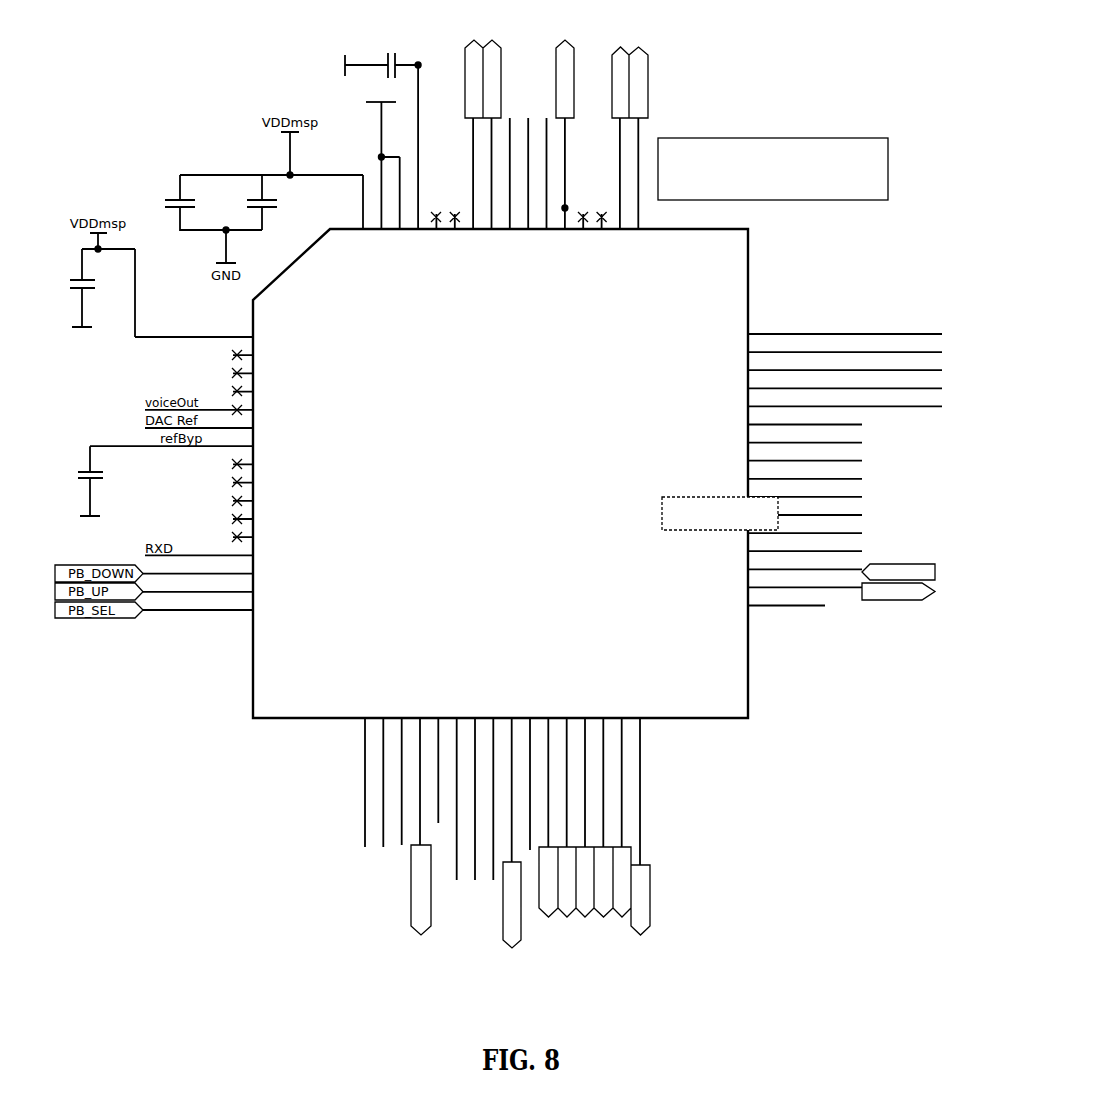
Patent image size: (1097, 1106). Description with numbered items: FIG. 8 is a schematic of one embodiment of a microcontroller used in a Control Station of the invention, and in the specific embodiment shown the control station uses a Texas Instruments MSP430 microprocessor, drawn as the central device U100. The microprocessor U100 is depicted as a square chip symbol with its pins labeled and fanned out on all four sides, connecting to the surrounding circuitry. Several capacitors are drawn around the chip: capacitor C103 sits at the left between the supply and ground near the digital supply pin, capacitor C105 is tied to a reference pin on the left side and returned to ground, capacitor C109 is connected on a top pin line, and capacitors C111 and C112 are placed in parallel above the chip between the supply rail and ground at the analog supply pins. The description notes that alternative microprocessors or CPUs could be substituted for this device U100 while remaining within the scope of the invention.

The microcontroller MSP430F1611IRTDT U100 is at (585, 494).
The capacitor C103 is at (94, 298).
The capacitor 0.047uF X7R C105 is at (120, 490).
The capacitor C109 is at (375, 55).
The capacitor 1uF X7R C111 is at (282, 202).
The capacitor 1uF C112 is at (202, 202).